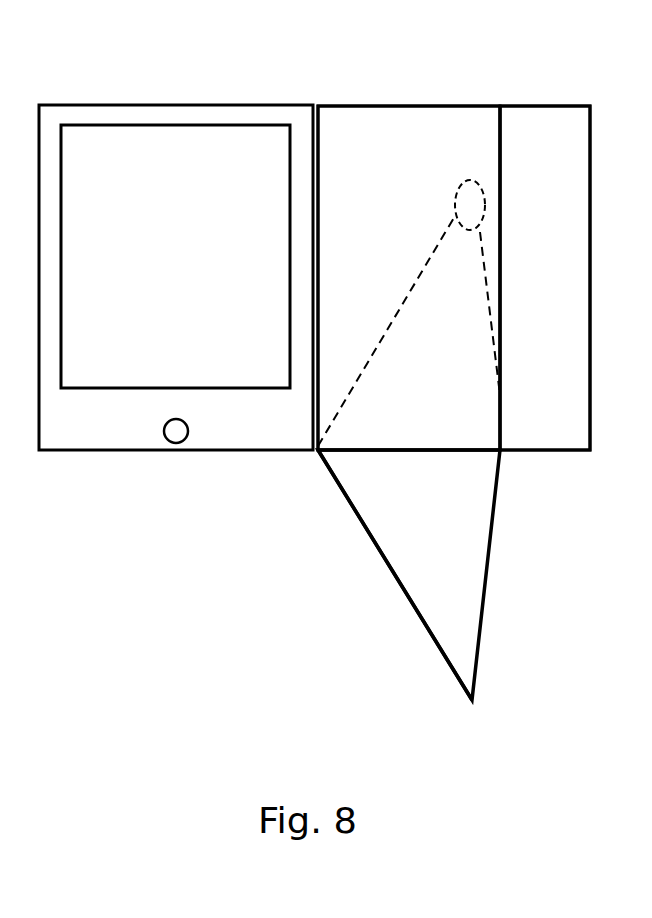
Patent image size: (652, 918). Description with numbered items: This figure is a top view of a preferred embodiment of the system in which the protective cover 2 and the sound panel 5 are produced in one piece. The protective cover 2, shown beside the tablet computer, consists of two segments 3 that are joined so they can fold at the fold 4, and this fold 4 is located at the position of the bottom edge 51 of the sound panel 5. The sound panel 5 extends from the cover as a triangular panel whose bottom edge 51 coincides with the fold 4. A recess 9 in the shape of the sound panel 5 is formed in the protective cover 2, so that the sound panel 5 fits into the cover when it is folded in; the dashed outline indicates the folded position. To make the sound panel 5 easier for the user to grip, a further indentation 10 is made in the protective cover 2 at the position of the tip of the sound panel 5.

The protective cover 2 is at (545, 104).
The segments 3 is at (536, 127).
The fold 4 is at (502, 332).
The sound panel 5 is at (445, 540).
The recess 9 is at (417, 393).
The indentation 10 is at (470, 188).
The bottom edge 51 is at (415, 452).